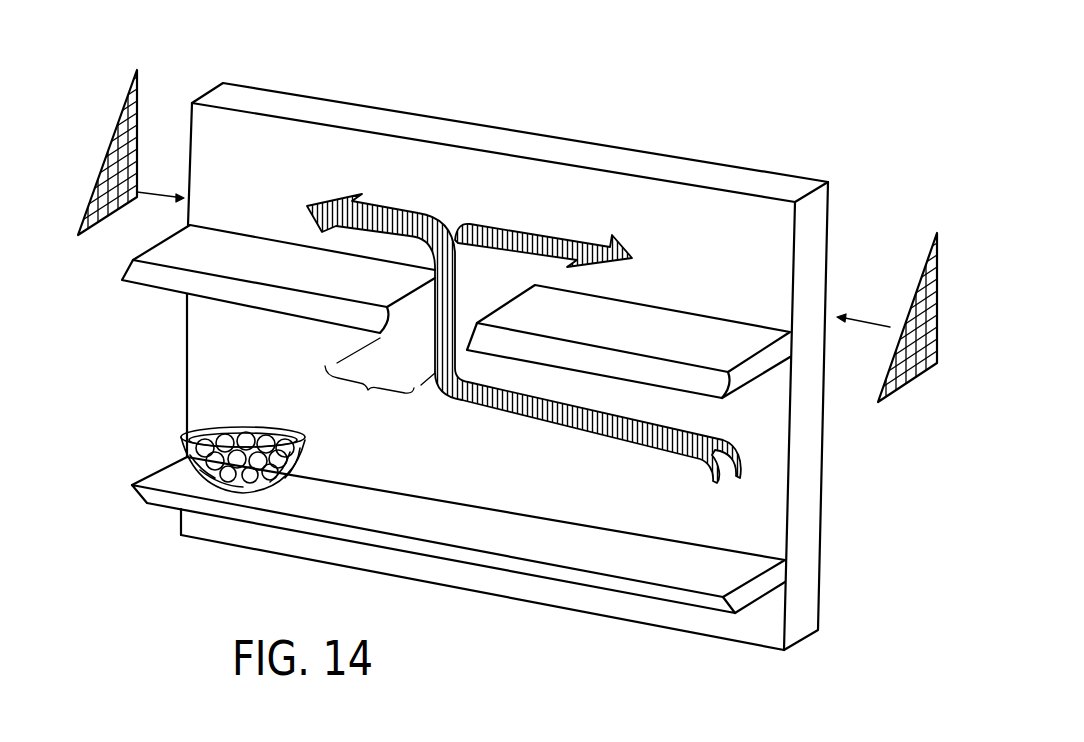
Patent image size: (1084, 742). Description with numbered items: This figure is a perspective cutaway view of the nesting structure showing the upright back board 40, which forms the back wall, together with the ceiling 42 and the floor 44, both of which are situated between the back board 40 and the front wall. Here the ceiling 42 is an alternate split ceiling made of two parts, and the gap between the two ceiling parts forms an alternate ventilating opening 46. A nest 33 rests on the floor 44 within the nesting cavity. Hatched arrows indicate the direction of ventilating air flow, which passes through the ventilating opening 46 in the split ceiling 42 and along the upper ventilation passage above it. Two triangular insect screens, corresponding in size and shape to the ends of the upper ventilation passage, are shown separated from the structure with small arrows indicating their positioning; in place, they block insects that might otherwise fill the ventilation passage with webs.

The nest 33 is at (182, 438).
The back board 40 is at (753, 445).
The ceiling 42 is at (315, 270).
The floor 44 is at (493, 523).
The ventilating opening 46 is at (380, 381).